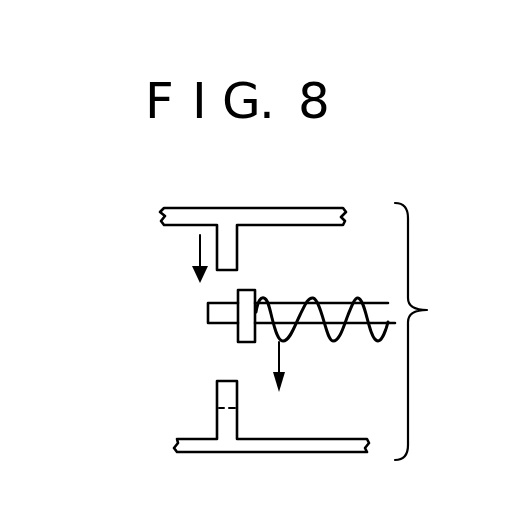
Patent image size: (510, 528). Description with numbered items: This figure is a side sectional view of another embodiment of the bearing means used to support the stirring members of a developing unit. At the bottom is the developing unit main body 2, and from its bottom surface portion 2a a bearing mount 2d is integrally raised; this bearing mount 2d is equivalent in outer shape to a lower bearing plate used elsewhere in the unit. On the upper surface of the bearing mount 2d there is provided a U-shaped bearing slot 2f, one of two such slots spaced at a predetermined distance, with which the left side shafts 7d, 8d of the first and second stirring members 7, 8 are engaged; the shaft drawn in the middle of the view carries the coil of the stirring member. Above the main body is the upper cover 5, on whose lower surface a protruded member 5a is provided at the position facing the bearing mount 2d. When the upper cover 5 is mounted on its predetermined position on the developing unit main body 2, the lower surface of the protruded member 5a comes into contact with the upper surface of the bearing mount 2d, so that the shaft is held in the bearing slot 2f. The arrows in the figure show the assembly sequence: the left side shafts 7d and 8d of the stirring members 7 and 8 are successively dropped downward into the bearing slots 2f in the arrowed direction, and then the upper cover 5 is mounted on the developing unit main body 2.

The developing unit main body 2 is at (305, 453).
The bottom surface portion 2a is at (285, 439).
The bearing mount 2d is at (217, 429).
The bearing slot 2f is at (217, 390).
The upper cover 5 is at (307, 213).
The protruded member 5a is at (227, 238).
The first stirring member 7 is at (301, 322).
The second stirring member 8 is at (290, 302).
The left side shaft 7d is at (143, 257).
The left side shaft 8d is at (143, 257).